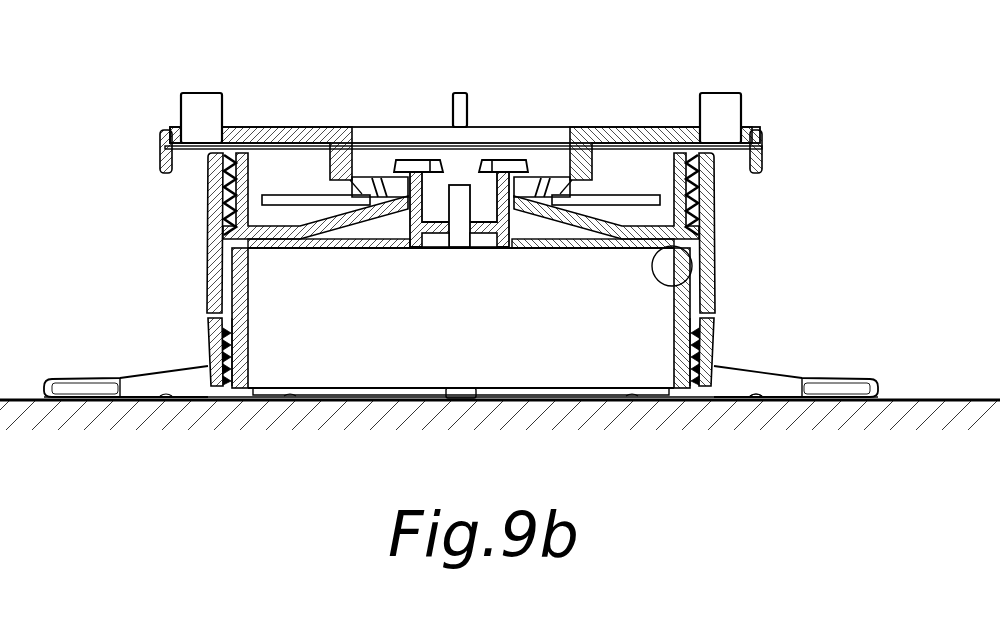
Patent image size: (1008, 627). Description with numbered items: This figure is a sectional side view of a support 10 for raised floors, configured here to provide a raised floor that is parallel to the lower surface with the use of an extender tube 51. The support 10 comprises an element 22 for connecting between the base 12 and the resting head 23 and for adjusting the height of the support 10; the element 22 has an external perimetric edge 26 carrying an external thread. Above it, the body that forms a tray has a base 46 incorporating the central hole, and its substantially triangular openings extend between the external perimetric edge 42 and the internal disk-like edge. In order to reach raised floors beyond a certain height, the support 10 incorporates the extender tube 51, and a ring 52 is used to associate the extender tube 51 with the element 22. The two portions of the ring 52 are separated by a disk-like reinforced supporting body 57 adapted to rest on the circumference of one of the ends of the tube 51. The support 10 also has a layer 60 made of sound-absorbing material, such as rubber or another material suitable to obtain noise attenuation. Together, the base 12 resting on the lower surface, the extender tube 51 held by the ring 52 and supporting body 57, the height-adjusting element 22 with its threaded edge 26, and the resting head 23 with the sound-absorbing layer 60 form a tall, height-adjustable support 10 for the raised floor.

The support 10 is at (500, 257).
The base 12 is at (160, 360).
The element 22 is at (228, 197).
The resting head 23 is at (172, 103).
The external perimetric edge 26 is at (688, 146).
The external perimetric edge 42 is at (750, 141).
The base 46 is at (560, 182).
The extender tube 51 is at (256, 328).
The ring 52 is at (200, 238).
The disk-like reinforced supporting body 57 is at (692, 268).
The layer 60 is at (333, 124).